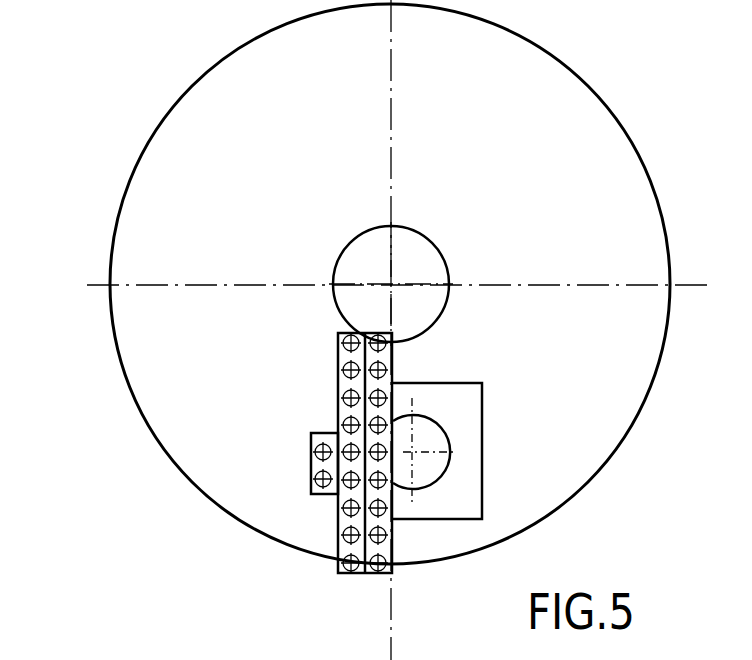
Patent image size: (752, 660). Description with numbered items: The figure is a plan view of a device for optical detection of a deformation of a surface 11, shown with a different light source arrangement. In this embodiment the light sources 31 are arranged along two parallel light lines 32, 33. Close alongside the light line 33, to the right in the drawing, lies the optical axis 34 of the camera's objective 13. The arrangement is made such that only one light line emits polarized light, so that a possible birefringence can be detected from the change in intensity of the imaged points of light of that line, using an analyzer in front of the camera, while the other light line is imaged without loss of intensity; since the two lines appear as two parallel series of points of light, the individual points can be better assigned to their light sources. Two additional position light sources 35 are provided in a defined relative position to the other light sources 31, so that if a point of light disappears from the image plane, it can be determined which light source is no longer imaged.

The surface 11 is at (140, 200).
The objective 13 is at (445, 460).
The light sources 31 is at (400, 481).
The light line 32 is at (353, 576).
The light line 33 is at (393, 574).
The optical axis 34 is at (414, 452).
The position light sources 35 is at (311, 475).